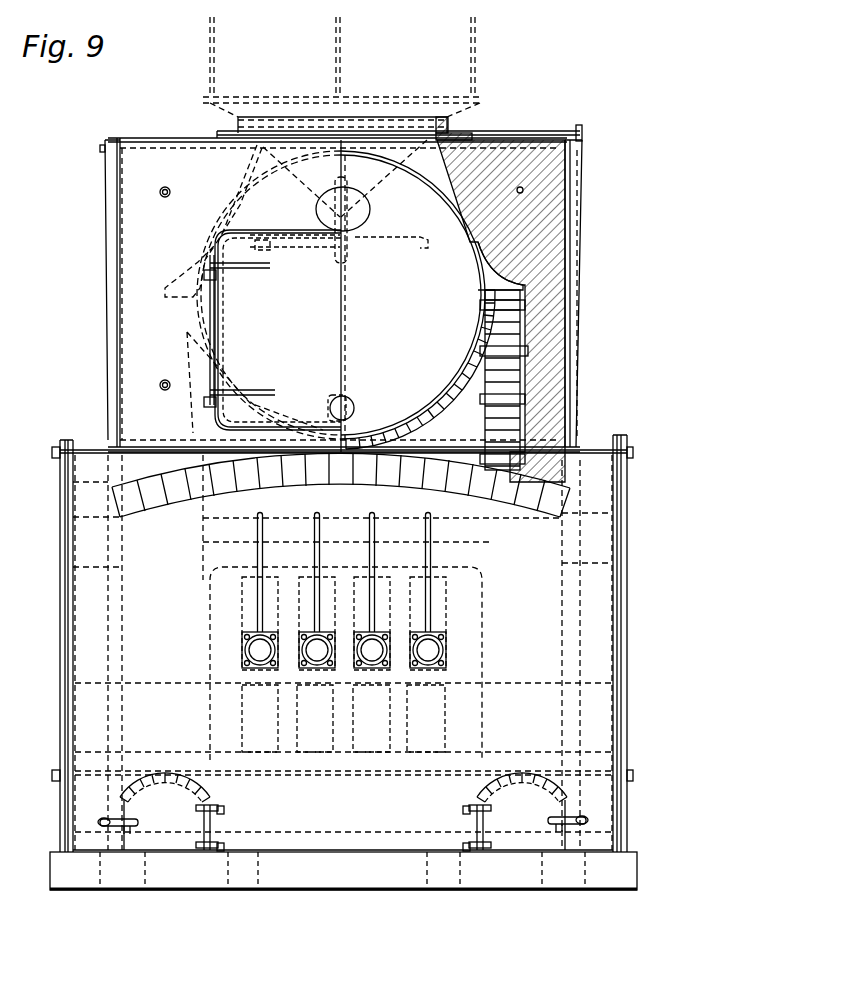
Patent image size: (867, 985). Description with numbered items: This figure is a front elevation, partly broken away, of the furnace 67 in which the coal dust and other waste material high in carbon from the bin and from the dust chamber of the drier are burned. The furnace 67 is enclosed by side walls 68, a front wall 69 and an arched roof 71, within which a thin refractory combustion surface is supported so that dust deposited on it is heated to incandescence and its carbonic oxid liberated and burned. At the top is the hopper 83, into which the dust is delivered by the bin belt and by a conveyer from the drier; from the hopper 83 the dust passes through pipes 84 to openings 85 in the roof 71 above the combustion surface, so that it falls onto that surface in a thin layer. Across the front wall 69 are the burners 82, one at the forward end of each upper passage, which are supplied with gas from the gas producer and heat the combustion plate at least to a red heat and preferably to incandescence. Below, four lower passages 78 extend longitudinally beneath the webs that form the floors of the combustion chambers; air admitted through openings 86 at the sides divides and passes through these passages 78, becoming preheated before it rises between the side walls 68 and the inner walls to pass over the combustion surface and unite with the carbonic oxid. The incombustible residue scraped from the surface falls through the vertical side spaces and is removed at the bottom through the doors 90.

The furnace 67 is at (339, 295).
The side walls 68 is at (615, 655).
The front wall 69 is at (343, 672).
The arched roof 71 is at (520, 508).
The lower passages 78 is at (455, 712).
The burner 82 is at (445, 650).
The hopper 83 is at (478, 58).
The pipes 84 is at (337, 369).
The openings 85 is at (347, 455).
The openings 86 is at (542, 686).
The doors 90 is at (478, 818).